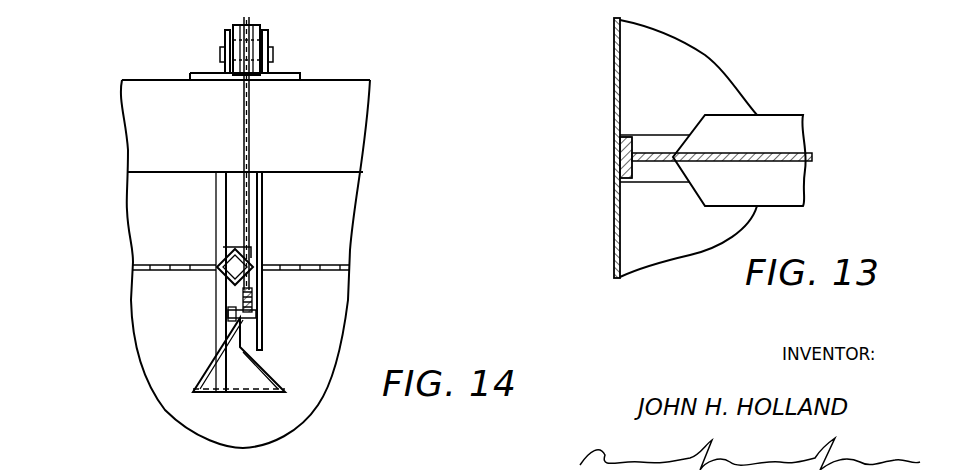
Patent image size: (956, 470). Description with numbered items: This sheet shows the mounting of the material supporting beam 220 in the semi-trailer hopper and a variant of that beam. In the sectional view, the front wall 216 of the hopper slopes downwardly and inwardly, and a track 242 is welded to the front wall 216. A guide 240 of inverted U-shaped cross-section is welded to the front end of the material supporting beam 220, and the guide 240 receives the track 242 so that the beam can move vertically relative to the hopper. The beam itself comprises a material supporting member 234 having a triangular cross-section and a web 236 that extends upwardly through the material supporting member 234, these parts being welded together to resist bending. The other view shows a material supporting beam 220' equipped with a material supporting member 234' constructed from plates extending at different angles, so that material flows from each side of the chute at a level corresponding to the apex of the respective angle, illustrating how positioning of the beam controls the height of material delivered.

In FIG. 13, the front wall 216 is at (614, 59).
In FIG. 13, the material supporting beam 220 is at (711, 124).
In FIG. 13, the material supporting member 234 is at (775, 160).
In FIG. 13, the web 236 is at (782, 162).
In FIG. 13, the guide 240 is at (621, 133).
In FIG. 13, the track 242 is at (620, 159).
In FIG. 14, the material supporting beam 220' is at (152, 275).
In FIG. 14, the material supporting member 234' is at (265, 343).